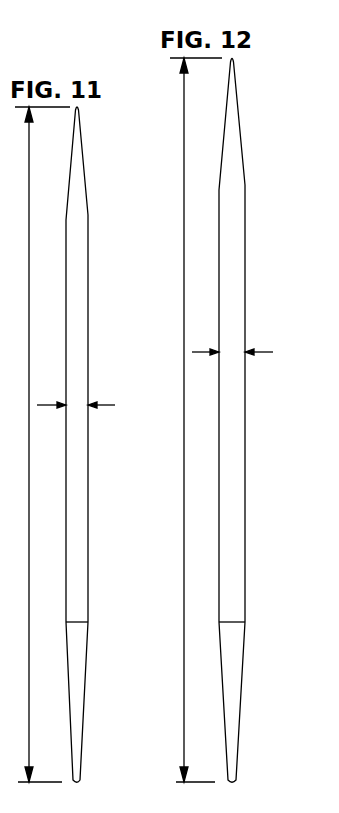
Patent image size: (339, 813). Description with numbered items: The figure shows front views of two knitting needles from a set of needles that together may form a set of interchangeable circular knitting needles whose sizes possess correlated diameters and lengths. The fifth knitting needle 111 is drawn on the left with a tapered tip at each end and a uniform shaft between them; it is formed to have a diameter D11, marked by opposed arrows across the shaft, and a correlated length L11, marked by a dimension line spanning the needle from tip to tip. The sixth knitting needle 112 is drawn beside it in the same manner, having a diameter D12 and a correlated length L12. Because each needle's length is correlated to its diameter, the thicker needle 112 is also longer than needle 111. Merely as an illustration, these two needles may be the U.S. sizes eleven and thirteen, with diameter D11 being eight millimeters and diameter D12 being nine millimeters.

In FIG. 11, the knitting needle 111 is at (78, 715).
In FIG. 12, the knitting needle 112 is at (232, 712).
In FIG. 11, the length L11 is at (42, 444).
In FIG. 11, the diameter D11 is at (98, 407).
In FIG. 12, the length L12 is at (196, 420).
In FIG. 12, the diameter D12 is at (251, 354).